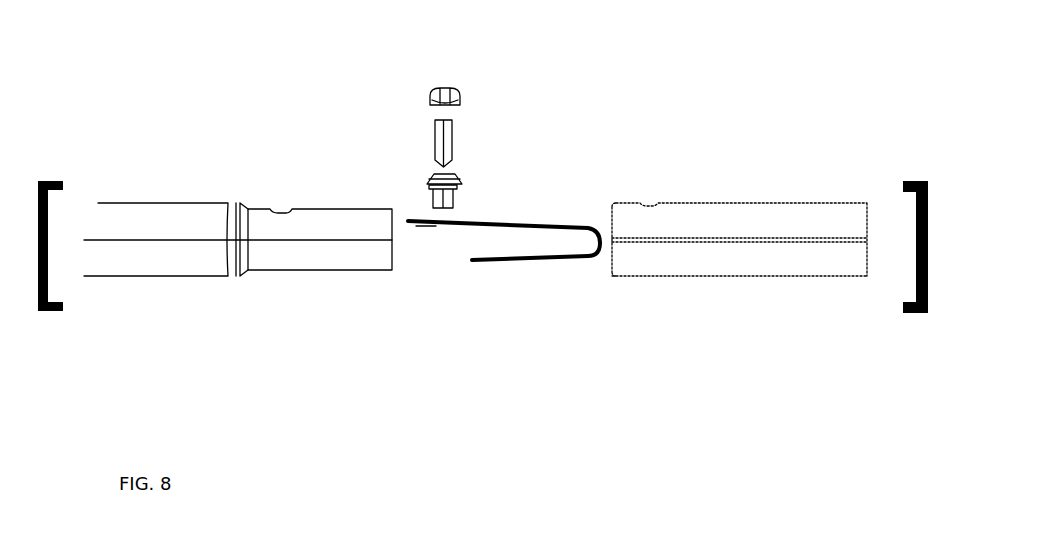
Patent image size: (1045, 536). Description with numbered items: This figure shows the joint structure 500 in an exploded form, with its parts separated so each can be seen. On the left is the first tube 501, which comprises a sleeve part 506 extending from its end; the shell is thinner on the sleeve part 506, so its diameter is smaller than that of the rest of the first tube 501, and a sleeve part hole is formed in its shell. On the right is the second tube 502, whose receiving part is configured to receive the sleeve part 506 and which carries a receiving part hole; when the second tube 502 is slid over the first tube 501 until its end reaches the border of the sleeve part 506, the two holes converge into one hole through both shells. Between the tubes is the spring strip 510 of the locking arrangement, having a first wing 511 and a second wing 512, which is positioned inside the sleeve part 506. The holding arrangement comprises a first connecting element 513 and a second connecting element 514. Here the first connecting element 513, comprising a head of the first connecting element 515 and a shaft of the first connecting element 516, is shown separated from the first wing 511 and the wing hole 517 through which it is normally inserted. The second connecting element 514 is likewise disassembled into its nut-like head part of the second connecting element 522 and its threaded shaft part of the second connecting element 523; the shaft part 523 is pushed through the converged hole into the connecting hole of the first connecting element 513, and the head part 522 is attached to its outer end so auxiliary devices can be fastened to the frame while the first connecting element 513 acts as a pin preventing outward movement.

The joint structure 500 is at (178, 58).
The first tube 501 is at (238, 297).
The sleeve part 506 is at (310, 277).
The second tube 502 is at (712, 278).
The spring strip 510 is at (525, 267).
The first wing 511 is at (553, 223).
The second wing 512 is at (490, 265).
The wing hole 517 is at (440, 232).
The first connecting element 513 is at (413, 175).
The second connecting element 514 is at (417, 114).
The head of the first connecting element 515 is at (463, 180).
The shaft of the first connecting element 516 is at (430, 193).
The head part of the second connecting element 522 is at (461, 95).
The shaft part of the second connecting element 523 is at (422, 116).